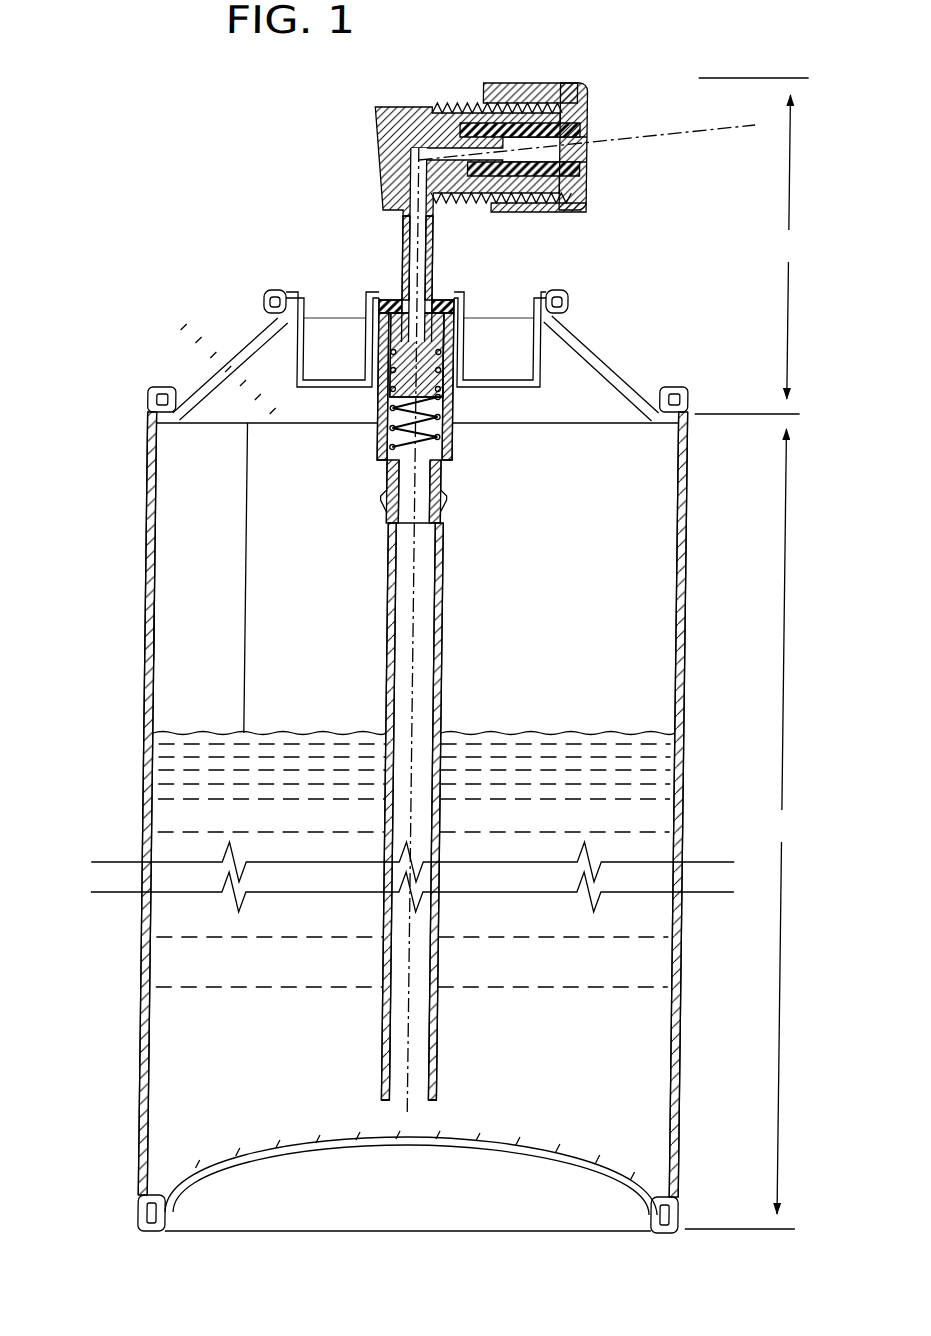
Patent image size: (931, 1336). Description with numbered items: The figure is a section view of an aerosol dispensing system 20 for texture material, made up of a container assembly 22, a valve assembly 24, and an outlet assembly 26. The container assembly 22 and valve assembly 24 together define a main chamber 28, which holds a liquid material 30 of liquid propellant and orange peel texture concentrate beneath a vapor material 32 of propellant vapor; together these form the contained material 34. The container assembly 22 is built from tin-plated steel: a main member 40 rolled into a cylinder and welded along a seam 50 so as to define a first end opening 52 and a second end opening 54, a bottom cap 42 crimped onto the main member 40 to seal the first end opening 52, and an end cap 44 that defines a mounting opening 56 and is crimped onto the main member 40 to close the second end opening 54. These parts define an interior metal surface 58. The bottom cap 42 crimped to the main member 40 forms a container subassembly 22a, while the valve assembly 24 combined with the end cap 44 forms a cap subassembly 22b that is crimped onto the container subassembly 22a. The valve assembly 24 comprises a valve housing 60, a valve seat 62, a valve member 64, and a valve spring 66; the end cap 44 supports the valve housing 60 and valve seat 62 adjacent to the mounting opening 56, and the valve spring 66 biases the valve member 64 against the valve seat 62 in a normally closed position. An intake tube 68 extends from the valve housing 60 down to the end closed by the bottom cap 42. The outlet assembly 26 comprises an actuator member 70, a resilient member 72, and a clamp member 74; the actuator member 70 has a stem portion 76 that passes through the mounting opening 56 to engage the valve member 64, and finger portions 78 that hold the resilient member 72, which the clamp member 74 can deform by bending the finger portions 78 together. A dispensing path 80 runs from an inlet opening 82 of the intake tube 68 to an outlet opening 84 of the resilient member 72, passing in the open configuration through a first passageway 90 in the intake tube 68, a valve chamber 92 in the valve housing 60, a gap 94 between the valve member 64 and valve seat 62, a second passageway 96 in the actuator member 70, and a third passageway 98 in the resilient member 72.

The aerosol dispensing system 20 is at (126, 277).
The container assembly 22 is at (100, 461).
The container subassembly 22a is at (745, 829).
The cap subassembly 22b is at (752, 246).
The valve assembly 24 is at (356, 448).
The outlet assembly 26 is at (352, 96).
The main chamber 28 is at (525, 632).
The liquid material 30 is at (172, 776).
The vapor material 32 is at (166, 672).
The contained material 34 is at (172, 708).
The main member 40 is at (145, 566).
The bottom cap 42 is at (242, 1145).
The end cap 44 is at (226, 358).
The seam 50 is at (243, 602).
The first end opening 52 is at (226, 1224).
The second end opening 54 is at (218, 406).
The mounting opening 56 is at (305, 292).
The interior metal surface 58 is at (150, 624).
The valve housing 60 is at (444, 452).
The valve seat 62 is at (436, 328).
The valve member 64 is at (428, 370).
The valve spring 66 is at (438, 406).
The intake tube 68 is at (386, 636).
The actuator member 70 is at (380, 135).
The resilient member 72 is at (578, 132).
The clamp member 74 is at (516, 90).
The stem portion 76 is at (400, 262).
The finger portions 78 is at (556, 100).
The dispensing path 80 is at (657, 138).
The inlet opening 82 is at (402, 1100).
The outlet opening 84 is at (567, 155).
The first passageway 90 is at (400, 672).
The valve chamber 92 is at (442, 424).
The gap 94 is at (460, 316).
The second passageway 96 is at (410, 236).
The third passageway 98 is at (508, 128).